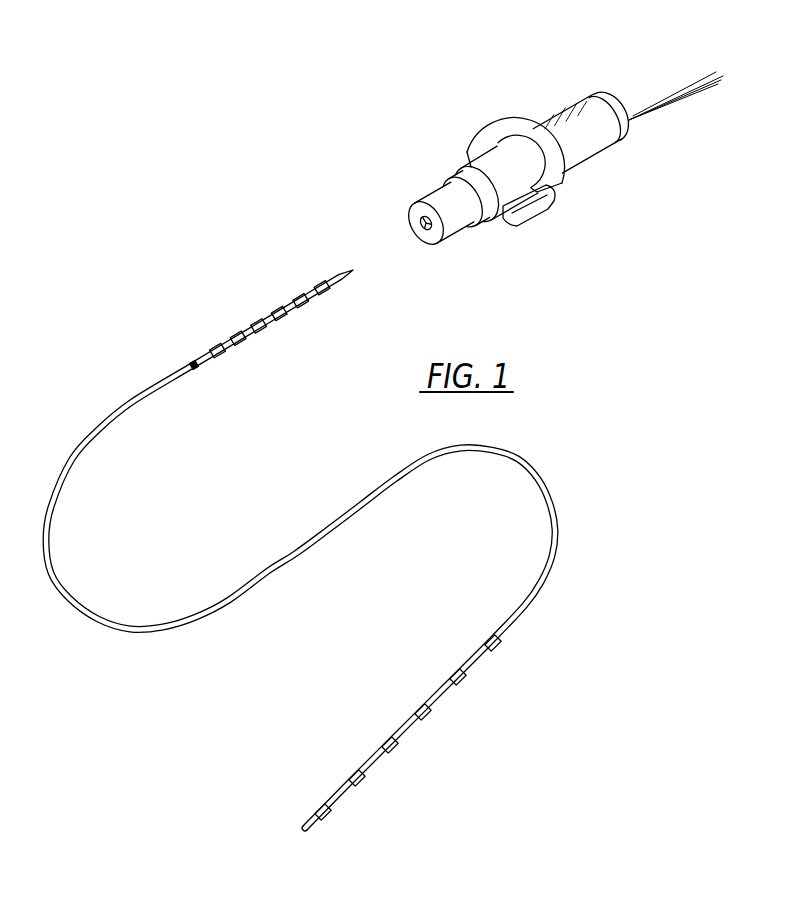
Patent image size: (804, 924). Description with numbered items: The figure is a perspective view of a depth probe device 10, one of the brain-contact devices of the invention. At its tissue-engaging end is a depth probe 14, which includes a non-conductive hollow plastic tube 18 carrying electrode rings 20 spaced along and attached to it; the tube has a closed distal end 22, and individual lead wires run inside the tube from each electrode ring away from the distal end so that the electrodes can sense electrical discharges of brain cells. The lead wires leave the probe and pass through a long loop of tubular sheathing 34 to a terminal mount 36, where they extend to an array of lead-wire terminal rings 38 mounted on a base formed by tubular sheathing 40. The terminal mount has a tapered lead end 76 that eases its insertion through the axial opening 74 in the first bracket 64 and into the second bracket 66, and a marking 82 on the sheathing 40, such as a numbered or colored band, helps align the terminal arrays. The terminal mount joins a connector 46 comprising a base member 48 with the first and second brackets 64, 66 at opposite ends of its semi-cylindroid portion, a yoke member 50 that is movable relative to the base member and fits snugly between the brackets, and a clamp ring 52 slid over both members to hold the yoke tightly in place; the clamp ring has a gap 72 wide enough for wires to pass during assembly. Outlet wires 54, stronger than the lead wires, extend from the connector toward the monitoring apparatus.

The depth probe device 10 is at (542, 698).
The depth probe 14 is at (372, 759).
The non-conductive hollow plastic tube 18 is at (346, 798).
The electrode rings 20 is at (322, 806).
The closed distal end 22 is at (300, 833).
The tubular sheathing 34 is at (222, 613).
The terminal mount 36 is at (261, 322).
The lead-wire terminal rings 38 is at (241, 342).
The tubular sheathing 40 is at (229, 337).
The connector 46 is at (610, 55).
The base member 48 is at (597, 160).
The yoke member 50 is at (568, 123).
The clamp ring 52 is at (505, 133).
The outlet wires 54 is at (683, 82).
The first bracket 64 is at (478, 213).
The second bracket 66 is at (615, 100).
The gap 72 is at (558, 190).
The axial opening 74 is at (414, 227).
The tapered lead end 76 is at (353, 272).
The marking 82 is at (194, 363).